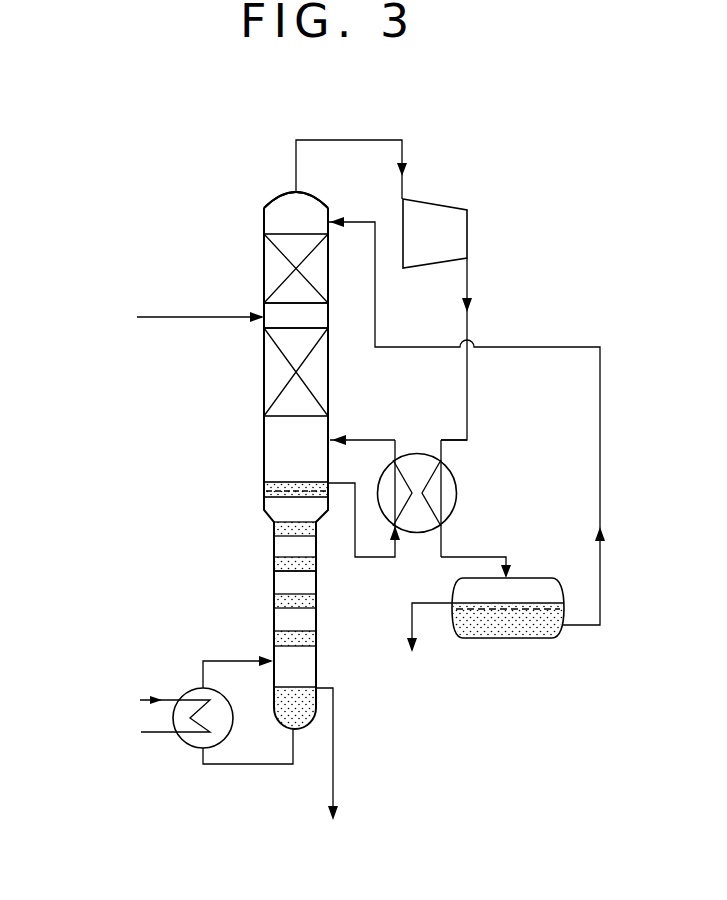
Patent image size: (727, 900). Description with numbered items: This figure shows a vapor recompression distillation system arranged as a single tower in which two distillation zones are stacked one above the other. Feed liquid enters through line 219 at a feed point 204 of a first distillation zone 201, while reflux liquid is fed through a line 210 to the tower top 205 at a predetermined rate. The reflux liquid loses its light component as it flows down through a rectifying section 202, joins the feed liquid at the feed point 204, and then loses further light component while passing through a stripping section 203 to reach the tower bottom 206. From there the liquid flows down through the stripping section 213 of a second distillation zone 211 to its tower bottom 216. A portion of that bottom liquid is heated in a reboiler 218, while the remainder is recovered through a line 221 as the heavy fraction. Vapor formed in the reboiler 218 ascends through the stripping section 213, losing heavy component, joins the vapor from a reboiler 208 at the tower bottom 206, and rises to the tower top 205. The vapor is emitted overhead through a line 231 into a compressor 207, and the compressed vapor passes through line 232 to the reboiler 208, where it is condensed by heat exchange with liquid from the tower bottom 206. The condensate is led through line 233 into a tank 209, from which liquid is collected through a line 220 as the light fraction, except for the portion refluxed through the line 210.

The first distillation zone 201 is at (340, 396).
The rectifying section 202 is at (262, 266).
The stripping section 203 is at (262, 393).
The feed point 204 is at (262, 325).
The tower top 205 is at (278, 214).
The tower bottom 206 is at (262, 460).
The compressor 207 is at (486, 221).
The reboiler 208 is at (445, 483).
The tank 209 is at (531, 577).
The line 210 is at (600, 606).
The second distillation zone 211 is at (328, 602).
The stripping section 213 is at (272, 583).
The tower bottom 216 is at (306, 679).
The reboiler 218 is at (191, 690).
The feed liquid line 219 is at (166, 316).
The line 220 is at (410, 632).
The line 221 is at (334, 782).
The line 231 is at (350, 139).
The compressed vapor line 232 is at (468, 294).
The condensate line 233 is at (484, 556).